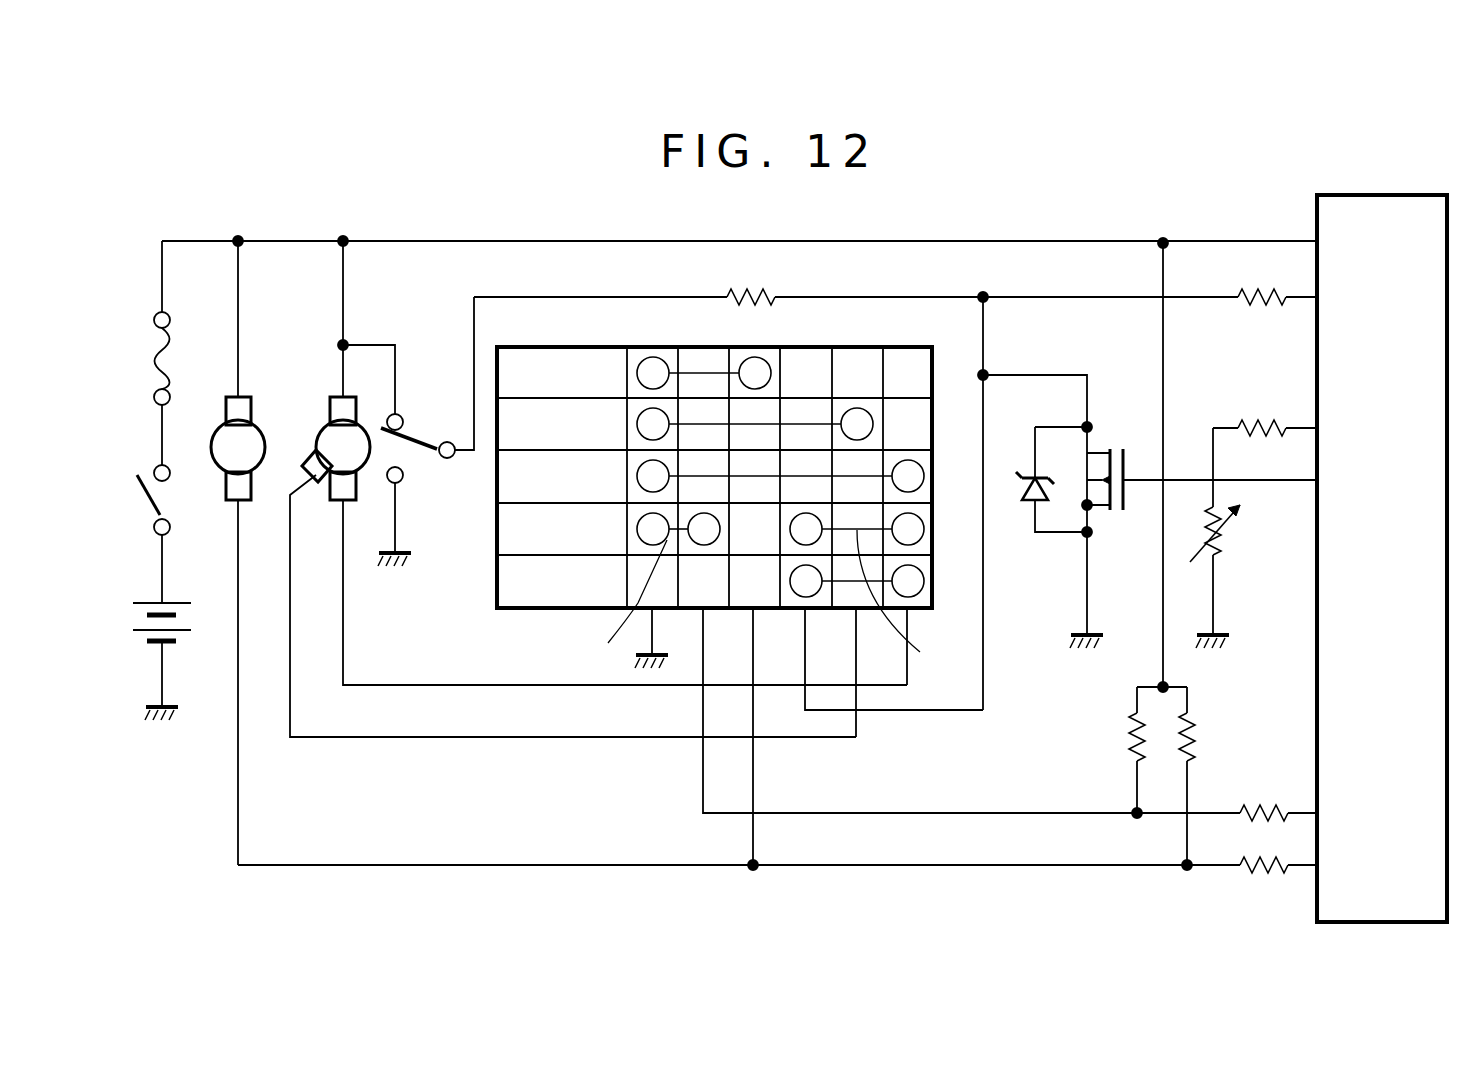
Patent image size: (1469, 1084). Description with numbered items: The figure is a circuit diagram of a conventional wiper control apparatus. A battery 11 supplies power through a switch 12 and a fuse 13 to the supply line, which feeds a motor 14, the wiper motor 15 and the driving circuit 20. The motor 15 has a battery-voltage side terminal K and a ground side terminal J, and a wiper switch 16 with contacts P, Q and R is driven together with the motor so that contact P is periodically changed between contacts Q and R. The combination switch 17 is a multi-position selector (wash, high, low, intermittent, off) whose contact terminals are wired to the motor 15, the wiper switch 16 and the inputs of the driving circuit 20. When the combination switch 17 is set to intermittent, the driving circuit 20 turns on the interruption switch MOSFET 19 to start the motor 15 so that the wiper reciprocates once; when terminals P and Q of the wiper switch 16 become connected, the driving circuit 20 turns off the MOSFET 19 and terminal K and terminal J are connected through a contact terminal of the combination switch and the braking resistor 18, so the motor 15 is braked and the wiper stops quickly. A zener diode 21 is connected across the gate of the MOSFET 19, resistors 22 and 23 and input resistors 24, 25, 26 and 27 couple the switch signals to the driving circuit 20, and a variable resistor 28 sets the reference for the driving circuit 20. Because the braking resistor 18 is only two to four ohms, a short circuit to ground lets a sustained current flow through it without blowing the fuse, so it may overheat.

The battery 11 is at (188, 622).
The ignition switch 12 is at (170, 494).
The fuse 13 is at (177, 343).
The washer motor 14 is at (212, 430).
The motor 15 is at (313, 442).
The wiper switch 16 is at (408, 455).
The combination switch 17 is at (598, 345).
The braking resistor 18 is at (754, 290).
The interruption switch MOSFET 19 is at (1114, 454).
The driving circuit 20 is at (1345, 195).
The zener diode 21 is at (1028, 499).
The resistor 22 is at (1128, 735).
The resistor 23 is at (1198, 738).
The resistor 24 is at (1264, 810).
The resistor 25 is at (1260, 876).
The resistor 26 is at (1263, 305).
The resistor 27 is at (1270, 421).
The variable resistor 28 is at (1230, 534).